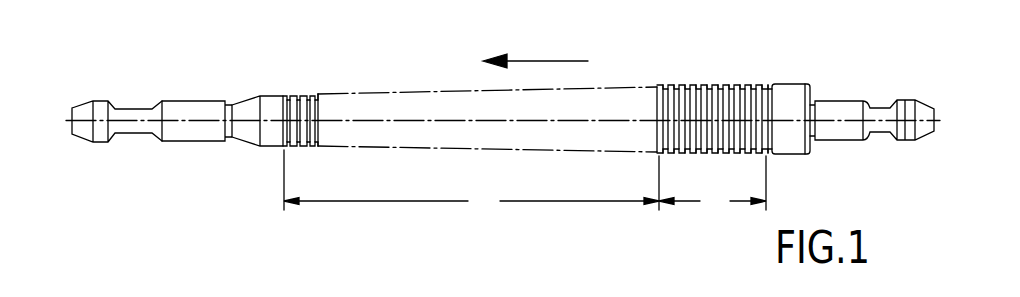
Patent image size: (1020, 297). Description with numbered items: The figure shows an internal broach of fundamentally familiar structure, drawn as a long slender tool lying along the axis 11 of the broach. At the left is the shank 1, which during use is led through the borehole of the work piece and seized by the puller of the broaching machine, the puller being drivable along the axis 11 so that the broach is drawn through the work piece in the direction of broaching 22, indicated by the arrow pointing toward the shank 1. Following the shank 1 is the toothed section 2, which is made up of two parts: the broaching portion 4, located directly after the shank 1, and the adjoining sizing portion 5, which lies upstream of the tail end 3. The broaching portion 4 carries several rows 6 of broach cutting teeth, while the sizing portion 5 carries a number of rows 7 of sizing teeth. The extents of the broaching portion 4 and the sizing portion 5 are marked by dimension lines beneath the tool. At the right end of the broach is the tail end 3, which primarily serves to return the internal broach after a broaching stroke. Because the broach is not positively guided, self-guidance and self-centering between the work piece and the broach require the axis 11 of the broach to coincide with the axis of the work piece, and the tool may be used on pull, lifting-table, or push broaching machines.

The shank 1 is at (133, 108).
The axis of the broach 11 is at (205, 121).
The rows of broach cutting teeth 6 is at (300, 118).
The toothed section 2 is at (443, 90).
The direction of broaching 22 is at (543, 61).
The rows of sizing teeth 7 is at (702, 86).
The tail end 3 is at (880, 110).
The broaching portion 4 is at (471, 182).
The sizing portion 5 is at (712, 185).